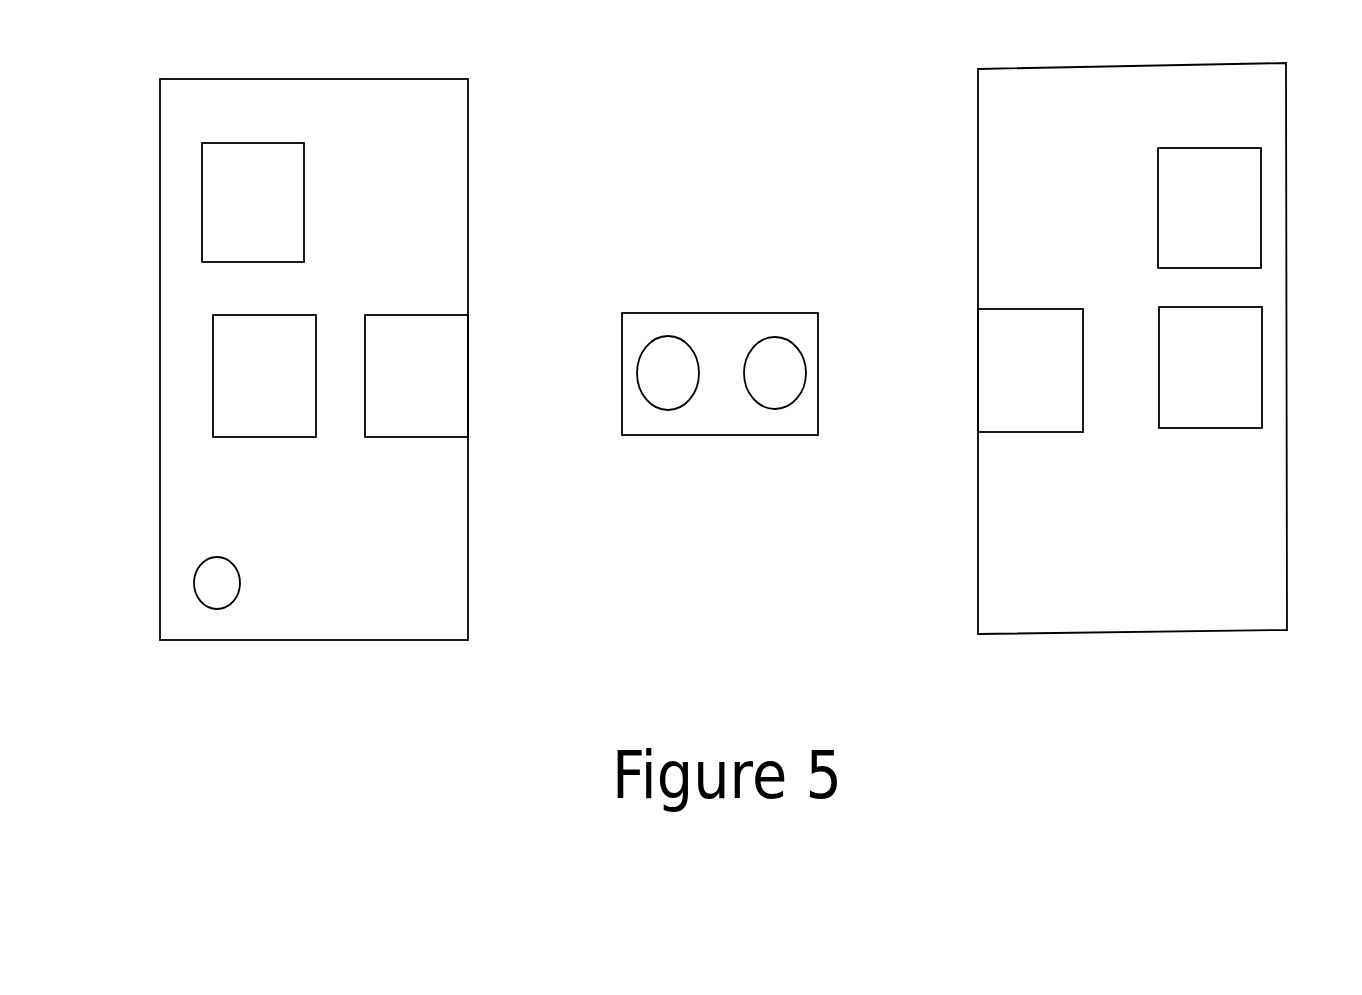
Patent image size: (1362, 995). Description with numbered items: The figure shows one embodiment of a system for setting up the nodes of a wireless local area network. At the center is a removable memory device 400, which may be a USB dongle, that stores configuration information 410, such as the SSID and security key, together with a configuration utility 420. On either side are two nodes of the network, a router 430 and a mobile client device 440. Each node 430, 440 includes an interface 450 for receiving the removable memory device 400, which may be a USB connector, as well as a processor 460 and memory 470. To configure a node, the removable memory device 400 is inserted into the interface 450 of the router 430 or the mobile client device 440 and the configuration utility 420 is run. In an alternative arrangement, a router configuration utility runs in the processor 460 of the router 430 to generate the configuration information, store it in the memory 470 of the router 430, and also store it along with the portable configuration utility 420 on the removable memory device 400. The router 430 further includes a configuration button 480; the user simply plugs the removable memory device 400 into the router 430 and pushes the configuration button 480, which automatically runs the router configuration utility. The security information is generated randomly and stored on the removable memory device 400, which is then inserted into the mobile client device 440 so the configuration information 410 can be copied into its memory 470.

The removable memory device 400 is at (698, 313).
The configuration information 410 is at (668, 337).
The configuration utility 420 is at (776, 337).
The router 430 is at (468, 213).
The mobile client device 440 is at (978, 193).
The interface 450 is at (468, 377).
The processor 460 is at (263, 437).
The memory 470 is at (306, 202).
The configuration button 480 is at (217, 610).